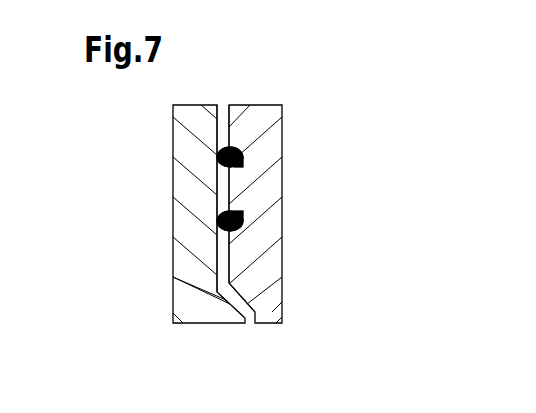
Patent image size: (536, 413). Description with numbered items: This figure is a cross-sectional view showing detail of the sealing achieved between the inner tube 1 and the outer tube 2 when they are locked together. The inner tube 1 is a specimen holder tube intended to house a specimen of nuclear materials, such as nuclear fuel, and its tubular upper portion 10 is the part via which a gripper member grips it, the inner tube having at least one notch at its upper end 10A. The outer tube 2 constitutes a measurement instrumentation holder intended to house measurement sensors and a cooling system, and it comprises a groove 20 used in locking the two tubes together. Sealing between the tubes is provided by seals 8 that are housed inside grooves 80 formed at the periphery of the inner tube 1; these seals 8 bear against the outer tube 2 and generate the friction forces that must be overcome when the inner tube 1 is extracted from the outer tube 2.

The upper end 10A is at (242, 105).
The tubular upper portion 10 is at (282, 122).
The groove 20 is at (182, 203).
The inner tube 1 is at (272, 312).
The outer tube 2 is at (190, 308).
The seal 8 is at (217, 157).
The groove 80 is at (243, 150).